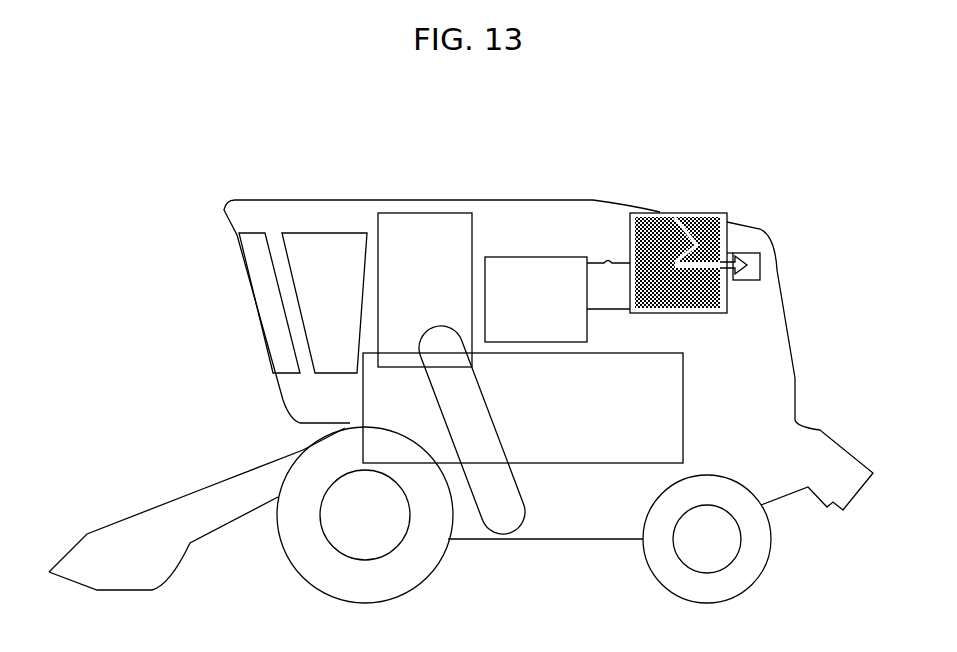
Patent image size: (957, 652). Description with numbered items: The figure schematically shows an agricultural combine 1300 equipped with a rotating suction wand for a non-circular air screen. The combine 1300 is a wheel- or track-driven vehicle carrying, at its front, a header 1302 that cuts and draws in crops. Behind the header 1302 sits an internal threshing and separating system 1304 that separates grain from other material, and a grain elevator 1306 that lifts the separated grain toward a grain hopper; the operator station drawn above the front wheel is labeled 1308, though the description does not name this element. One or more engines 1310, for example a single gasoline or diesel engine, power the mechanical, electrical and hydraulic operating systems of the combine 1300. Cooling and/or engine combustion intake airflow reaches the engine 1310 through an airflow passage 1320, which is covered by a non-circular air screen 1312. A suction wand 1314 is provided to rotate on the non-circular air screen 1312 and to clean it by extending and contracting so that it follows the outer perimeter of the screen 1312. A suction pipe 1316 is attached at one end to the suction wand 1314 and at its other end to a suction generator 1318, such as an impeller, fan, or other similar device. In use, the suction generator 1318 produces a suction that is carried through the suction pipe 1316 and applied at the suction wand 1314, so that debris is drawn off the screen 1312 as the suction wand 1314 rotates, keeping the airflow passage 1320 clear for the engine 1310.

The agricultural combine 1300 is at (318, 152).
The header 1302 is at (183, 512).
The internal threshing and separating system 1304 is at (567, 466).
The grain elevator 1306 is at (497, 537).
The operator cab 1308 is at (445, 213).
The engine 1310 is at (503, 257).
The non-circular air screen 1312 is at (717, 213).
The suction wand 1314 is at (677, 216).
The suction pipe 1316 is at (733, 252).
The suction generator 1318 is at (760, 267).
The airflow passage 1320 is at (608, 261).